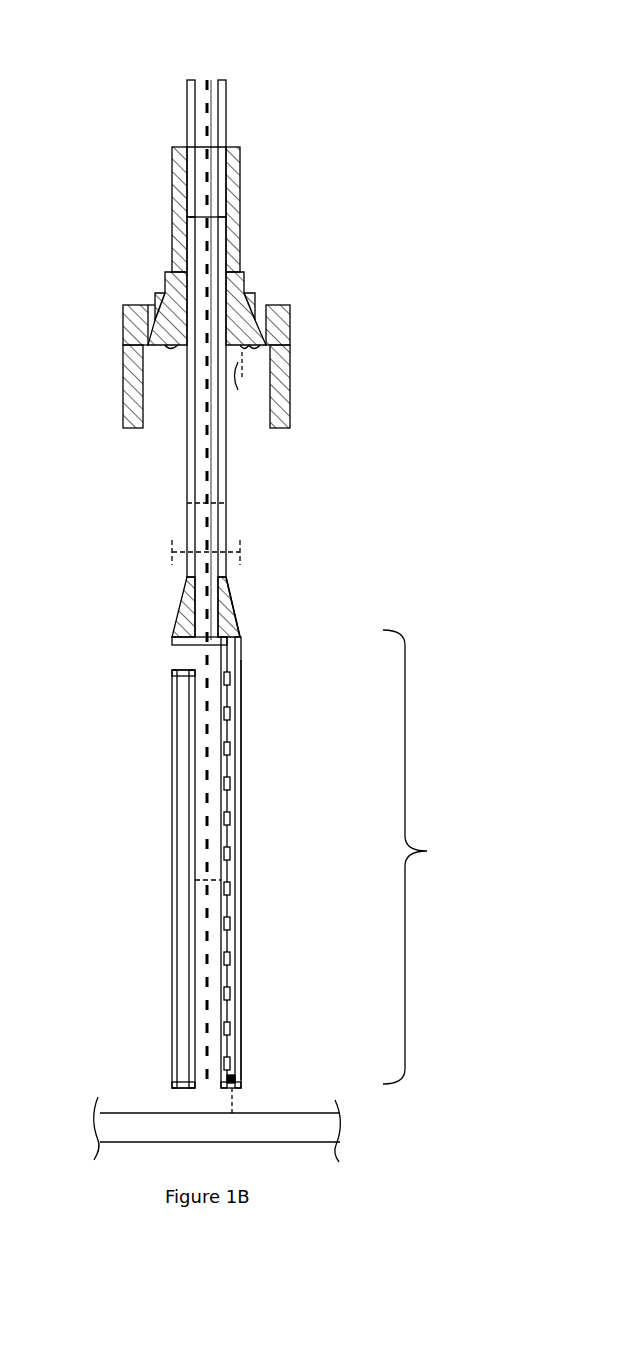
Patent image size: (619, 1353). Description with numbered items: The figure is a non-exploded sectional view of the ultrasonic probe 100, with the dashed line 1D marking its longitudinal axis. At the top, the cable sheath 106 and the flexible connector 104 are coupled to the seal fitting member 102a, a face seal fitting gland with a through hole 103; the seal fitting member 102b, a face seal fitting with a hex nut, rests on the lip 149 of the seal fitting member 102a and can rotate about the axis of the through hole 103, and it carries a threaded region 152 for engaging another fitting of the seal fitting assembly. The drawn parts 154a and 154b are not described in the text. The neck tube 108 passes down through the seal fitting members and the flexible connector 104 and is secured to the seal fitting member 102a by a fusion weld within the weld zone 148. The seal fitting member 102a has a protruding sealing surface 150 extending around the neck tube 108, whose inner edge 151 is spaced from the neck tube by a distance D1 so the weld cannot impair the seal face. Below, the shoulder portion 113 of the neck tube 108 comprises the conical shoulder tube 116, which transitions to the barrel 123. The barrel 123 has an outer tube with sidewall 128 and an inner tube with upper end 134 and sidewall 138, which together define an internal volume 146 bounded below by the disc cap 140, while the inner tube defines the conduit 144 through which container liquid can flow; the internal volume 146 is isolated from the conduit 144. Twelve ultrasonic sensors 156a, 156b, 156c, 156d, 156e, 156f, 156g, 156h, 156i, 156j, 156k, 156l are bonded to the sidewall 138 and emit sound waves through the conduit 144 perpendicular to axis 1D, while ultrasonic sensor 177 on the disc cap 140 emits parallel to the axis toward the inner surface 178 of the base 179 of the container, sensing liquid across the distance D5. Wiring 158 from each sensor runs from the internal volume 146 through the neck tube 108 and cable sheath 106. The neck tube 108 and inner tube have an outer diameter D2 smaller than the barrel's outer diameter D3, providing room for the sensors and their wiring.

The longitudinal axis 1D is at (207, 82).
The ultrasonic probe 100 is at (80, 171).
The cable sheath 106 is at (226, 105).
The neck tube 108 is at (224, 540).
The flexible connector 104 is at (240, 205).
The through hole 103 is at (232, 290).
The seal fitting member 102a is at (246, 292).
The seal fitting member 102b is at (285, 306).
The left leg 154a is at (123, 342).
The right leg 154b is at (290, 342).
The lip 149 is at (153, 318).
The weld zone 148 is at (181, 348).
The threaded region 152 is at (143, 396).
The inner edge 151 is at (245, 347).
The protruding sealing surface 150 is at (249, 347).
The distance D1 is at (240, 384).
The outer diameter D2 is at (205, 505).
The outer diameter D3 is at (200, 553).
The shoulder portion 113 is at (150, 570).
The shoulder tube 116 is at (232, 582).
The wiring 158 is at (238, 641).
The internal volume 146 is at (231, 790).
The sidewall 128 is at (241, 1003).
The ultrasonic sensor 156a is at (231, 678).
The ultrasonic sensor 156b is at (231, 713).
The ultrasonic sensor 156c is at (231, 748).
The ultrasonic sensor 156d is at (231, 783).
The ultrasonic sensor 156e is at (231, 818).
The ultrasonic sensor 156f is at (231, 853).
The ultrasonic sensor 156g is at (231, 888).
The ultrasonic sensor 156h is at (231, 923).
The ultrasonic sensor 156i is at (231, 958).
The ultrasonic sensor 156j is at (231, 993).
The ultrasonic sensor 156k is at (231, 1028).
The ultrasonic sensor 156l is at (231, 1063).
The ultrasonic sensor 177 is at (240, 1082).
The conduit 144 is at (205, 803).
The upper end 134 is at (172, 663).
The sidewall 138 is at (213, 1005).
The disc cap 140 is at (172, 1070).
The distance D5 is at (252, 1113).
The inner surface 178 is at (336, 1115).
The base 179 is at (160, 1143).
The barrel 123 is at (427, 857).